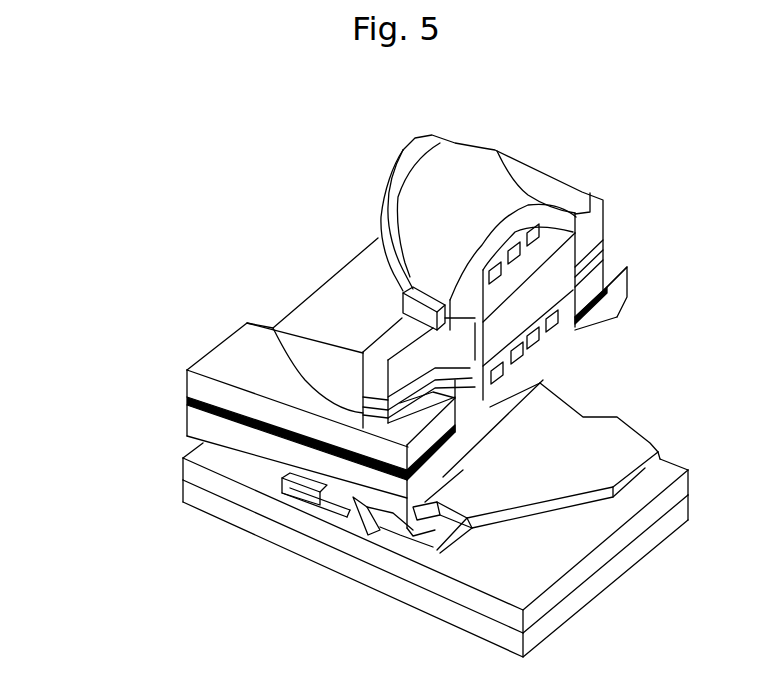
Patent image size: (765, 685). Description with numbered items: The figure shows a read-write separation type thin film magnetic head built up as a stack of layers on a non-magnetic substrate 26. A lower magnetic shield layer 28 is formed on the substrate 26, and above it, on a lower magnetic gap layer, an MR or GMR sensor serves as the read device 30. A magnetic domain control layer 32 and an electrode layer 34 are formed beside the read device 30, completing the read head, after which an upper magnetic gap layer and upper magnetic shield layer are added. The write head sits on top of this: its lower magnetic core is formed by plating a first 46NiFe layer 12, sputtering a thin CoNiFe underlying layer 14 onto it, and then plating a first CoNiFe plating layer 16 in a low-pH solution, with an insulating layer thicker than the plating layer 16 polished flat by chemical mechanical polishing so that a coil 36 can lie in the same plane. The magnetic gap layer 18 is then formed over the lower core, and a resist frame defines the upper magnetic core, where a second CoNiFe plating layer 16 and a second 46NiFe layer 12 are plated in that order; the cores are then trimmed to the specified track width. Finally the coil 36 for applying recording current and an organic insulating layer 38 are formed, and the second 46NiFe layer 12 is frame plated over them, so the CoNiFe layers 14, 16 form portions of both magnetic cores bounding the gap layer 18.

The 46NiFe layer 12 is at (483, 150).
The CoNiFe underlying layer 14 is at (187, 400).
The CoNiFe plating layer 16 is at (540, 393).
The magnetic gap layer 18 is at (273, 328).
The non-magnetic substrate 26 is at (543, 627).
The lower magnetic shield layer 28 is at (630, 532).
The read device 30 is at (350, 520).
The magnetic domain control layer 32 is at (385, 535).
The electrode layer 34 is at (653, 440).
The coil 36 is at (538, 237).
The organic insulating layer 38 is at (387, 197).